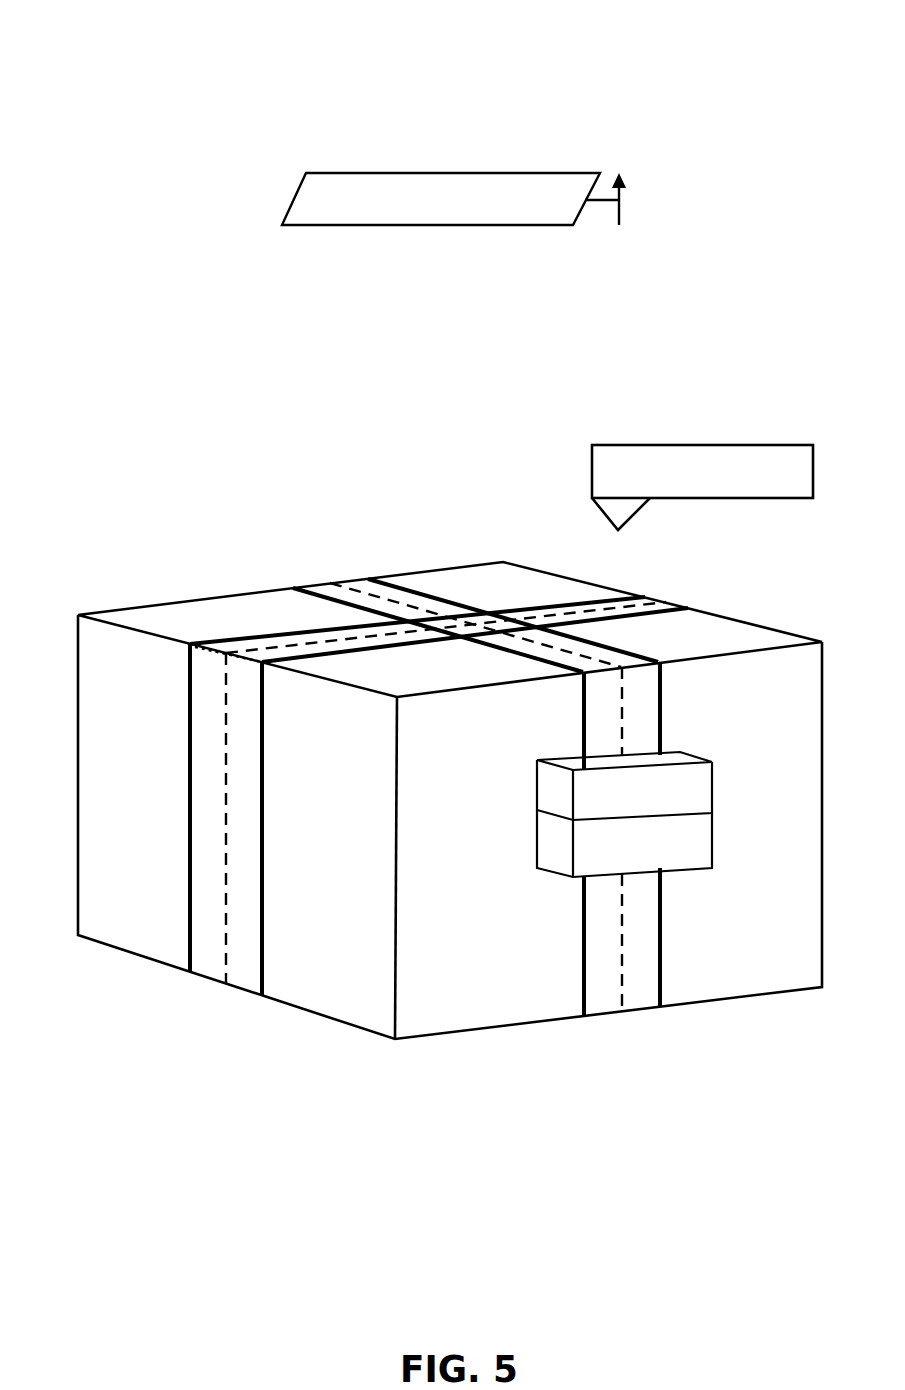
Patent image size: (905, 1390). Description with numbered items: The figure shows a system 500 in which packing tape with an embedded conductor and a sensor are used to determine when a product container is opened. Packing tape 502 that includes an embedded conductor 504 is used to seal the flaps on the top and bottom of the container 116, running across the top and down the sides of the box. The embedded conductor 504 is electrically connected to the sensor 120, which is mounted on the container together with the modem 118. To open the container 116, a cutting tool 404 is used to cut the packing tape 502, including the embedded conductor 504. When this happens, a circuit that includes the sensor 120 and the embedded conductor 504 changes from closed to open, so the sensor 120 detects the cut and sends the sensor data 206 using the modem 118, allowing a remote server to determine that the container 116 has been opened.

The system 500 is at (91, 37).
The sensor data 206 is at (531, 209).
The container 116 is at (503, 562).
The packing tape 502 is at (273, 632).
The embedded conductor 504 is at (323, 583).
The cutting tool 404 is at (795, 484).
The modem 118 is at (668, 806).
The sensor 120 is at (665, 862).